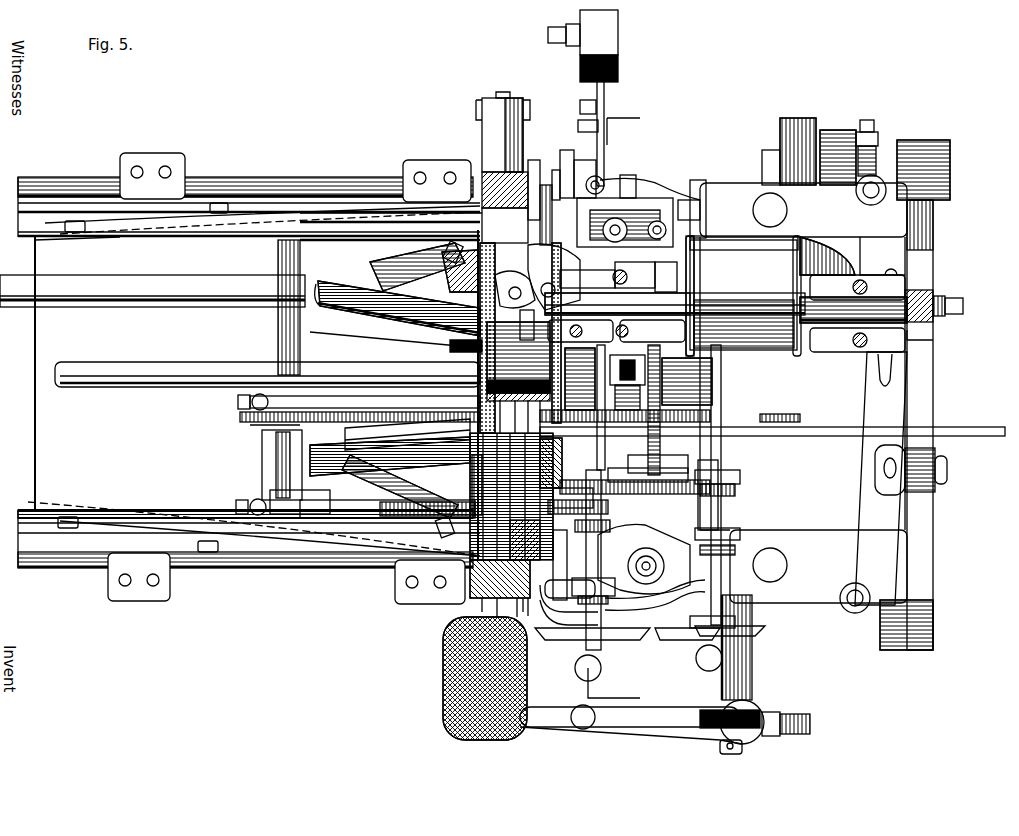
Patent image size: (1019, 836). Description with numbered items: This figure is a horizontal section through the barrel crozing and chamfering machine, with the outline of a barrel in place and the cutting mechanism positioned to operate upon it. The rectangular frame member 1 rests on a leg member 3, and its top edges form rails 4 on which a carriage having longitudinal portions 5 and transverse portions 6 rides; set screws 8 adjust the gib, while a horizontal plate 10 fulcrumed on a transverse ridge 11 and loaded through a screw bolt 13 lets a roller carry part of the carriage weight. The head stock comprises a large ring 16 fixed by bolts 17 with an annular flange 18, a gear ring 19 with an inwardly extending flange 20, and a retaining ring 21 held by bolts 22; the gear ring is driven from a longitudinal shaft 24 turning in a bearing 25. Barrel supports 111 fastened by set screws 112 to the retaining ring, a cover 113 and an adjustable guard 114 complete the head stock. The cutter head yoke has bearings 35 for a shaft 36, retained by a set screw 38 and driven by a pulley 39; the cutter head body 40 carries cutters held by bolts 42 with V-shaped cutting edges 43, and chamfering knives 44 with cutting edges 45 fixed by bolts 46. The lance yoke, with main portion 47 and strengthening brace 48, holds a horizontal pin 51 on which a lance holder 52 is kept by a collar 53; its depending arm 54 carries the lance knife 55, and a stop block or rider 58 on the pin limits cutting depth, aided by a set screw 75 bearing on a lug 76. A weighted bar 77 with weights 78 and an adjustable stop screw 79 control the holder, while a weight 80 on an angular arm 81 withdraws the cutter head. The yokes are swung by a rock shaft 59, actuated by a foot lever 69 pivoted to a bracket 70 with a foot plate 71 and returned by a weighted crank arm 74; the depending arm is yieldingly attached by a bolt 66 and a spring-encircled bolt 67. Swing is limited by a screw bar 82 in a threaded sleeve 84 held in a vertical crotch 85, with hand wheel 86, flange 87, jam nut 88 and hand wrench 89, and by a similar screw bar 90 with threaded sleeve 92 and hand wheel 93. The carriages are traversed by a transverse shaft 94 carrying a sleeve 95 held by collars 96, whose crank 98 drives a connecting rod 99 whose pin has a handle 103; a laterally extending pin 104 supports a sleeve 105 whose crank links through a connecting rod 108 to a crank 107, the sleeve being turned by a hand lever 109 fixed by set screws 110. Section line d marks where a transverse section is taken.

The rectangular frame member 1 is at (62, 190).
The leg member 3 is at (918, 150).
The rails 4 is at (906, 425).
The longitudinal portions of carriage 5 is at (803, 394).
The transverse portions of carriage 6 is at (881, 478).
The set screws 8 is at (580, 104).
The horizontal plate 10 is at (650, 190).
The transverse ridge 11 is at (700, 190).
The screw bolt 13 is at (635, 494).
The large ring 16 is at (532, 172).
The bolts 17 is at (570, 565).
The annular flange 18 is at (536, 405).
The gear ring 19 is at (470, 194).
The inwardly extending flange 20 is at (482, 216).
The retaining ring 21 is at (482, 180).
The bolts 22 is at (447, 341).
The longitudinal shaft 24 is at (350, 366).
The bearing 25 is at (638, 379).
The bearings 35 is at (760, 336).
The shaft 36 is at (726, 308).
The set screw 38 is at (945, 312).
The pulley 39 is at (795, 296).
The cutter head body 40 is at (515, 296).
The bolts 42 is at (581, 306).
The V-shaped cutting edges 43 is at (557, 310).
The chamfering knives 44 is at (617, 303).
The cutting edges 45 is at (520, 330).
The bolts 46 is at (424, 272).
The main portion of lance yoke 47 is at (613, 281).
The strengthening brace 48 is at (744, 249).
The horizontal pin 51 is at (700, 228).
The lance holder 52 is at (640, 198).
The collar 53 is at (665, 277).
The depending arm 54 is at (584, 198).
The lance knife 55 is at (566, 150).
The stop block or rider 58 is at (544, 177).
The rock shaft 59 is at (152, 291).
The bolt 66 is at (656, 454).
The bolt 67 is at (645, 375).
The foot lever 69 is at (482, 610).
The bracket 70 is at (503, 132).
The foot plate 71 is at (443, 697).
The weighted crank arm 74 is at (830, 140).
The set screw 75 is at (694, 272).
The lug 76 is at (635, 277).
The weighted bar 77 is at (604, 98).
The weights 78 is at (583, 46).
The adjustable stop screw 79 is at (615, 180).
The weight 80 is at (648, 460).
The angular arm 81 is at (696, 495).
The screw bar 82 is at (562, 458).
The threaded sleeve 84 is at (600, 530).
The vertical crotch 85 is at (640, 640).
The hand wheel 86 is at (600, 655).
The flange 87 is at (643, 574).
The jam nut 88 is at (573, 481).
The hand wrench 89 is at (648, 489).
The screw bar 90 is at (723, 443).
The threaded sleeve 92 is at (738, 522).
The hand wheel 93 is at (765, 631).
The transverse shaft 94 is at (278, 340).
The sleeve 95 is at (282, 465).
The collars 96 is at (262, 508).
The crank 98 is at (262, 428).
The connecting rod 99 is at (400, 396).
The handle 103 is at (942, 460).
The laterally extending pin 104 is at (743, 737).
The sleeve 105 is at (711, 669).
The crank 107 is at (300, 501).
The connecting rod 108 is at (391, 477).
The hand lever 109 is at (636, 730).
The set screws 110 is at (800, 716).
The barrel supports 111 is at (395, 300).
The set screws 112 is at (446, 250).
The cover 113 is at (578, 502).
The adjustable guard 114 is at (518, 361).
The section line d d is at (624, 407).